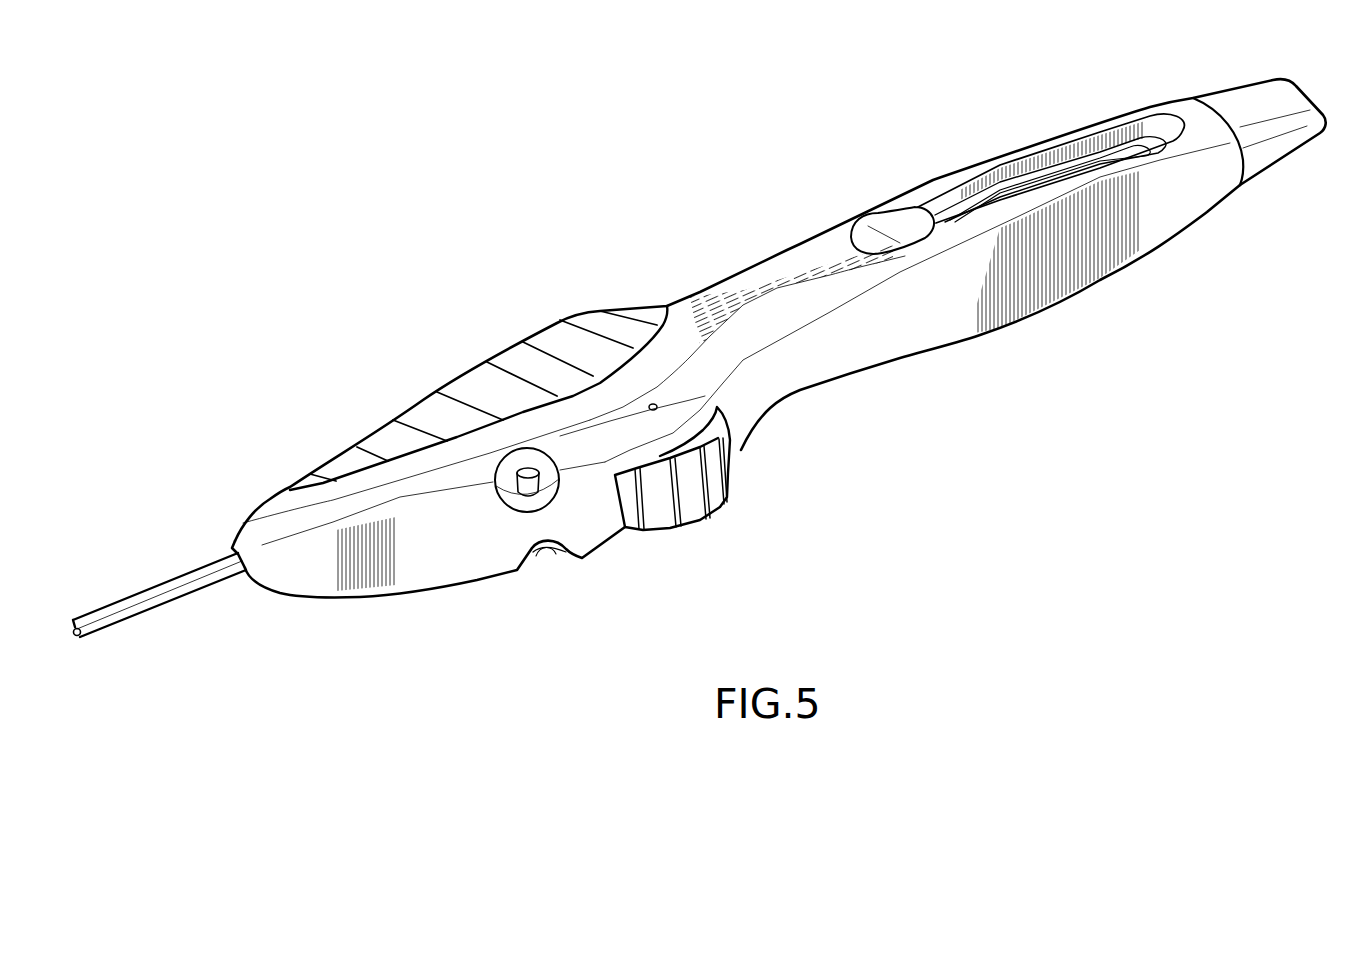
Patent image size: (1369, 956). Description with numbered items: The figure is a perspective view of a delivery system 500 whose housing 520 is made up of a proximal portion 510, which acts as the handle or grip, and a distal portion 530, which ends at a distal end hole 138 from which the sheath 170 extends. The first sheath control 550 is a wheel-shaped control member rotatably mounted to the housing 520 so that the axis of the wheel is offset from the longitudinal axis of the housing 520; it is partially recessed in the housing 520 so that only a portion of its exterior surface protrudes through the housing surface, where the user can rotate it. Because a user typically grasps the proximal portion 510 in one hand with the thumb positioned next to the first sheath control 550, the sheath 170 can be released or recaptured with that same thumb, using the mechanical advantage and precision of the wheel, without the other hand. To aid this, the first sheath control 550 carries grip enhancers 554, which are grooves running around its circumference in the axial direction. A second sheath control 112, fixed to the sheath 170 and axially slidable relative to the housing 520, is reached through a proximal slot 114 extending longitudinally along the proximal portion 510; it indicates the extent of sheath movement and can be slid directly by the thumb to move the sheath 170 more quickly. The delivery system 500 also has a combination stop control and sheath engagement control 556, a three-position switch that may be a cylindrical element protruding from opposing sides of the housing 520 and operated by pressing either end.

The delivery system 500 is at (551, 228).
The proximal portion 510 is at (1063, 273).
The housing 520 is at (889, 405).
The distal portion 530 is at (420, 567).
The second sheath control 112 is at (880, 227).
The proximal slot 114 is at (1023, 183).
The distal end hole 138 is at (243, 571).
The sheath 170 is at (157, 590).
The first sheath control 550 is at (692, 512).
The grip enhancers 554 is at (697, 492).
The combination stop control and sheath engagement control 556 is at (548, 558).